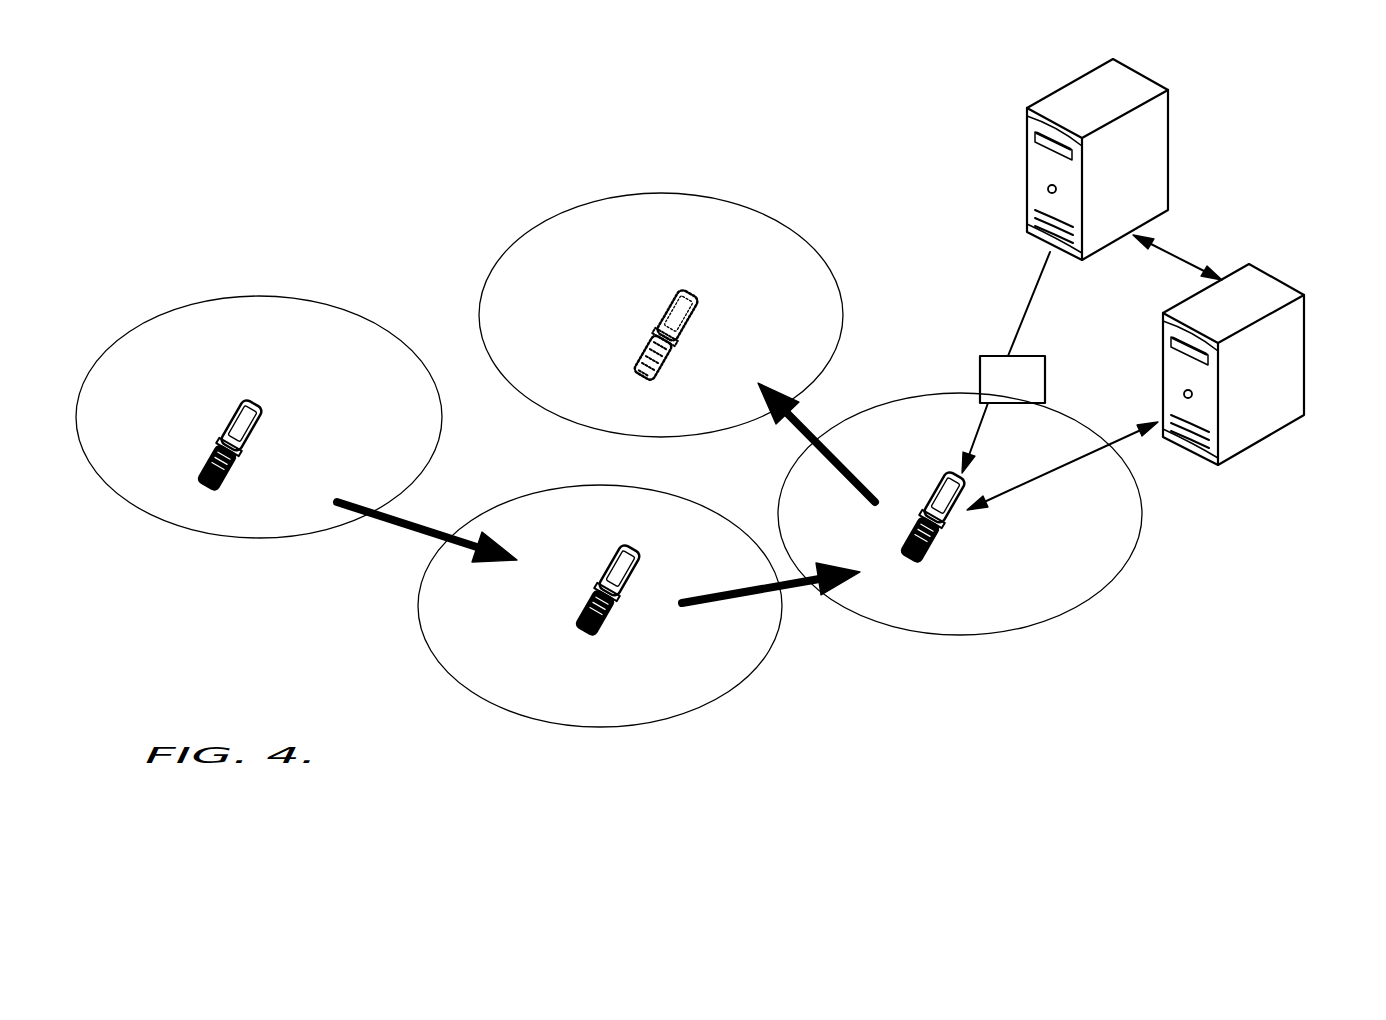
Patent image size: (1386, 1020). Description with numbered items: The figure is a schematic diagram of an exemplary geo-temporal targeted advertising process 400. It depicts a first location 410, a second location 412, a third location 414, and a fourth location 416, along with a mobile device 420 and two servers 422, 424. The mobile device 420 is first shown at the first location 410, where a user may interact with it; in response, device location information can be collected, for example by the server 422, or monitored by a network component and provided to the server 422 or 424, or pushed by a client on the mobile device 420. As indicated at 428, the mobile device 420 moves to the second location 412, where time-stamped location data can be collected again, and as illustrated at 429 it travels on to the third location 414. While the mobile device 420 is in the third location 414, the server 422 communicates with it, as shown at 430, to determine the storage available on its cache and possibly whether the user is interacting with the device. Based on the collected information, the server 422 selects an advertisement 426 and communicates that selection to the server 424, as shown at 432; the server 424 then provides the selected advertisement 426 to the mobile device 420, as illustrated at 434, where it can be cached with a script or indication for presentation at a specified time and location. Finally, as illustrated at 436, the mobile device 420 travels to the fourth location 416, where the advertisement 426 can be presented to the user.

The geo-temporal targeted advertising process 400 is at (261, 168).
The first location 410 is at (258, 540).
The second location 412 is at (602, 728).
The third location 414 is at (960, 635).
The fourth location 416 is at (845, 316).
The mobile device 420 is at (240, 472).
The server 422 is at (1307, 360).
The server 424 is at (1170, 160).
The advertisement 426 is at (980, 372).
The movement from first location to second location 428 is at (433, 527).
The travel to third location 429 is at (713, 590).
The server communication with mobile device 430 is at (1037, 480).
The communication of advertisement selection 432 is at (1192, 262).
The provision of selected advertisement 434 is at (1035, 300).
The travel from third location to fourth location 436 is at (825, 442).